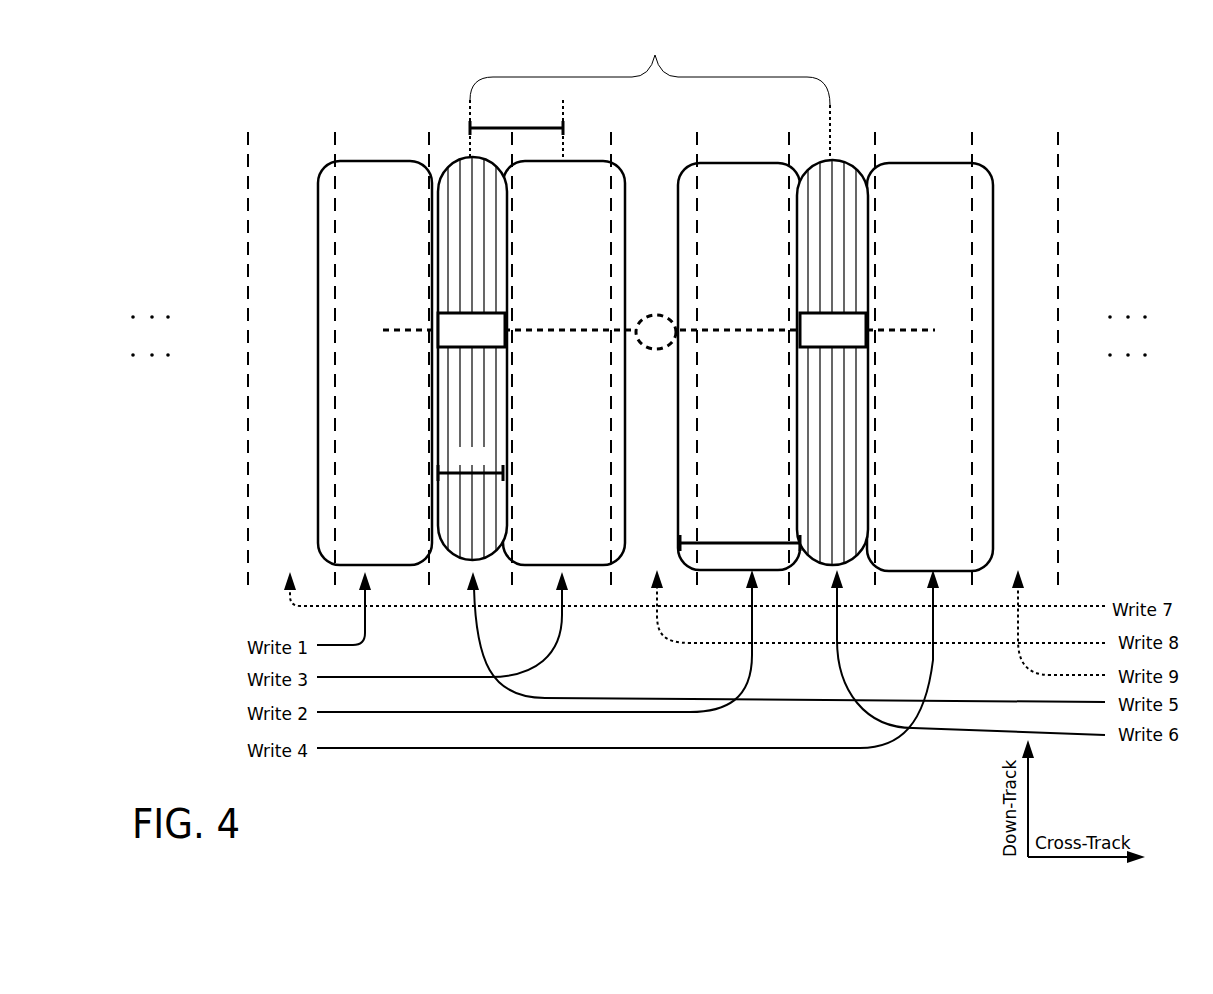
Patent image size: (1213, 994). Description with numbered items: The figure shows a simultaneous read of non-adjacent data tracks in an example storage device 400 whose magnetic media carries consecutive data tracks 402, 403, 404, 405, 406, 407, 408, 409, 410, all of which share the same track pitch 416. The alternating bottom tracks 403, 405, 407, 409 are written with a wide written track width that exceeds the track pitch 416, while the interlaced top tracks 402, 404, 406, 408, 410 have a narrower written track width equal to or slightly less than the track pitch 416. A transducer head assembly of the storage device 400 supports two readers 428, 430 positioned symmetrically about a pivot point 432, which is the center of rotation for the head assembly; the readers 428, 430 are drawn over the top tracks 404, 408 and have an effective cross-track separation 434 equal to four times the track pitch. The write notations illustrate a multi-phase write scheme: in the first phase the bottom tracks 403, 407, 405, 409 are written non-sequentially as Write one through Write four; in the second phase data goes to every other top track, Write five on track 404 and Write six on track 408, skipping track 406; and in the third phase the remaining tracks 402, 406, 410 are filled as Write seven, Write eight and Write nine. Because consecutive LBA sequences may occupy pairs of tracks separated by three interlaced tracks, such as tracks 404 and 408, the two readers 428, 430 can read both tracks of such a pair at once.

The storage device 400 is at (310, 114).
The data track 402 is at (306, 212).
The data track 403 is at (397, 212).
The data track 404 is at (490, 212).
The data track 405 is at (579, 212).
The data track 406 is at (669, 212).
The data track 407 is at (762, 212).
The data track 408 is at (849, 212).
The data track 409 is at (947, 212).
The data track 410 is at (1029, 212).
The track pitch 416 is at (516, 130).
The reader 428 is at (471, 330).
The reader 430 is at (833, 330).
The pivot point 432 is at (656, 315).
The effective cross-track separation 434 is at (655, 55).